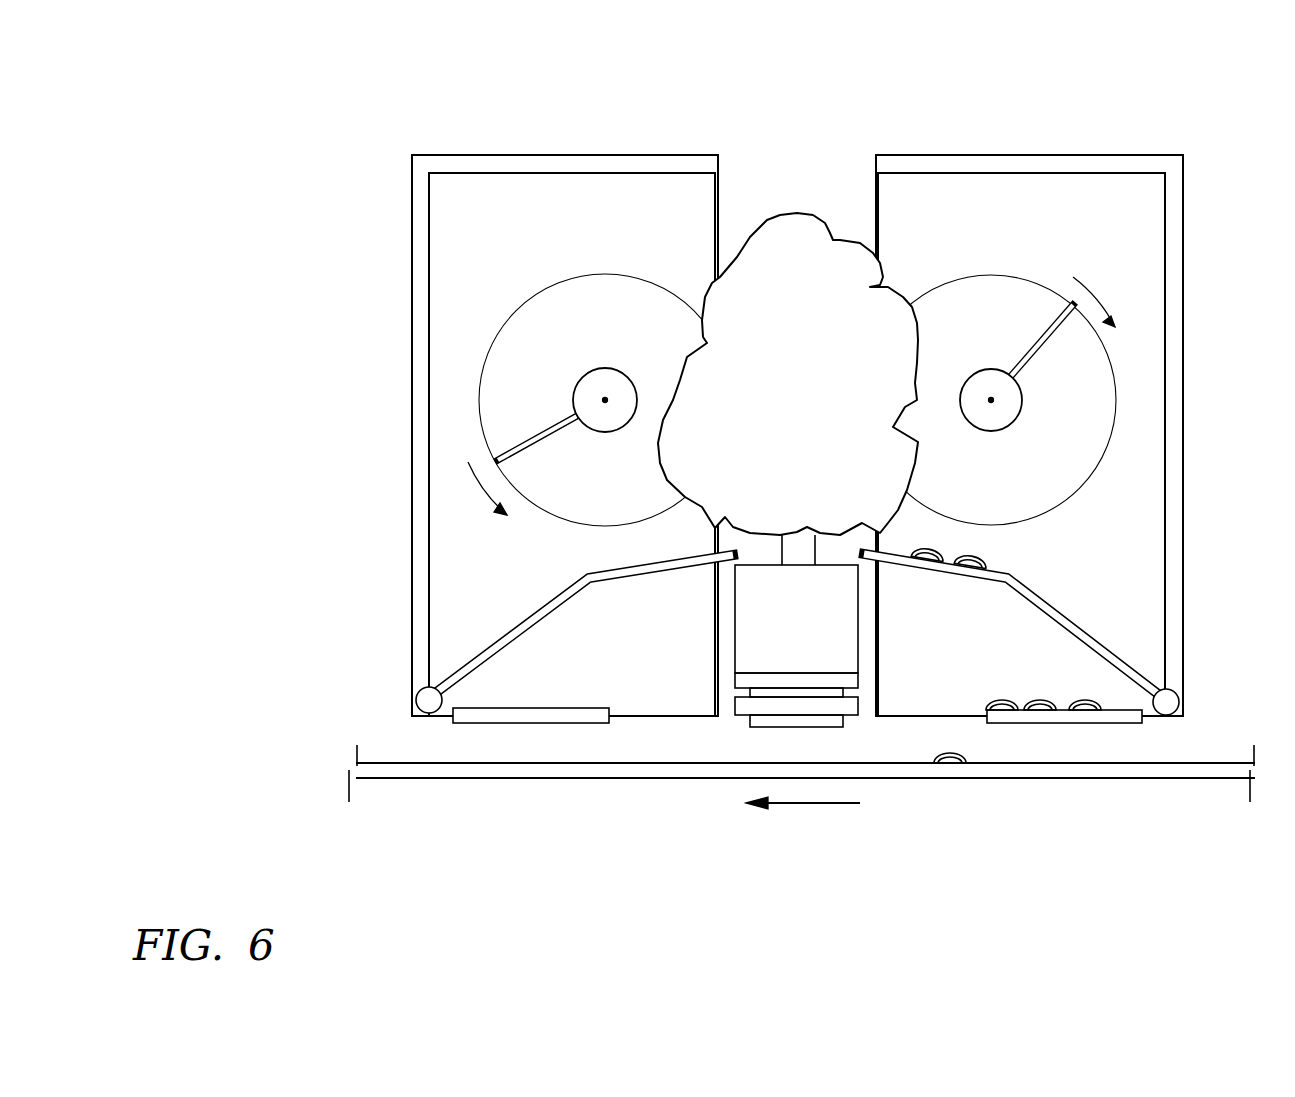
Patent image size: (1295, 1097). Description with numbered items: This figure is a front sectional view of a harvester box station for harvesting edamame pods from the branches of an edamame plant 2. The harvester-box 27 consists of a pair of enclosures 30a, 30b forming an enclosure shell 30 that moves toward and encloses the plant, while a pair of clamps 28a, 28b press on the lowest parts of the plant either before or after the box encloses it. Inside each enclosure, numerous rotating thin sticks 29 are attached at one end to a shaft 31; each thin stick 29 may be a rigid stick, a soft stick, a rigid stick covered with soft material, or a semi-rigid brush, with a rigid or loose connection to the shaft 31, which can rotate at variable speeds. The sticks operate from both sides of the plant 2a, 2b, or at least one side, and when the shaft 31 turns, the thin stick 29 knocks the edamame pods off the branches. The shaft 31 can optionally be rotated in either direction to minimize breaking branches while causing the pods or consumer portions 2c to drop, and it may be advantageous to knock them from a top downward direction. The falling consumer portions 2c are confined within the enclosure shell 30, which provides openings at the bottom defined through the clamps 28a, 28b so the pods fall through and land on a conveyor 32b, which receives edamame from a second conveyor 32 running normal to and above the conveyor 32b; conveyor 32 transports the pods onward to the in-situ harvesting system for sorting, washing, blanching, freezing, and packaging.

The edamame plant 2 is at (785, 242).
The side of the plant 2a is at (1055, 378).
The side of the plant 2b is at (527, 382).
The consumer portions 2c is at (992, 558).
The harvester-box 27 is at (1127, 249).
The clamp 28a is at (1073, 617).
The clamp 28b is at (527, 615).
The rotating thin stick 29 is at (1040, 357).
The enclosure shell 30 is at (965, 154).
The enclosure 30a is at (1090, 154).
The enclosure 30b is at (548, 154).
The shaft 31 is at (1022, 413).
The second conveyor 32 is at (1095, 723).
The conveyor 32b is at (538, 779).